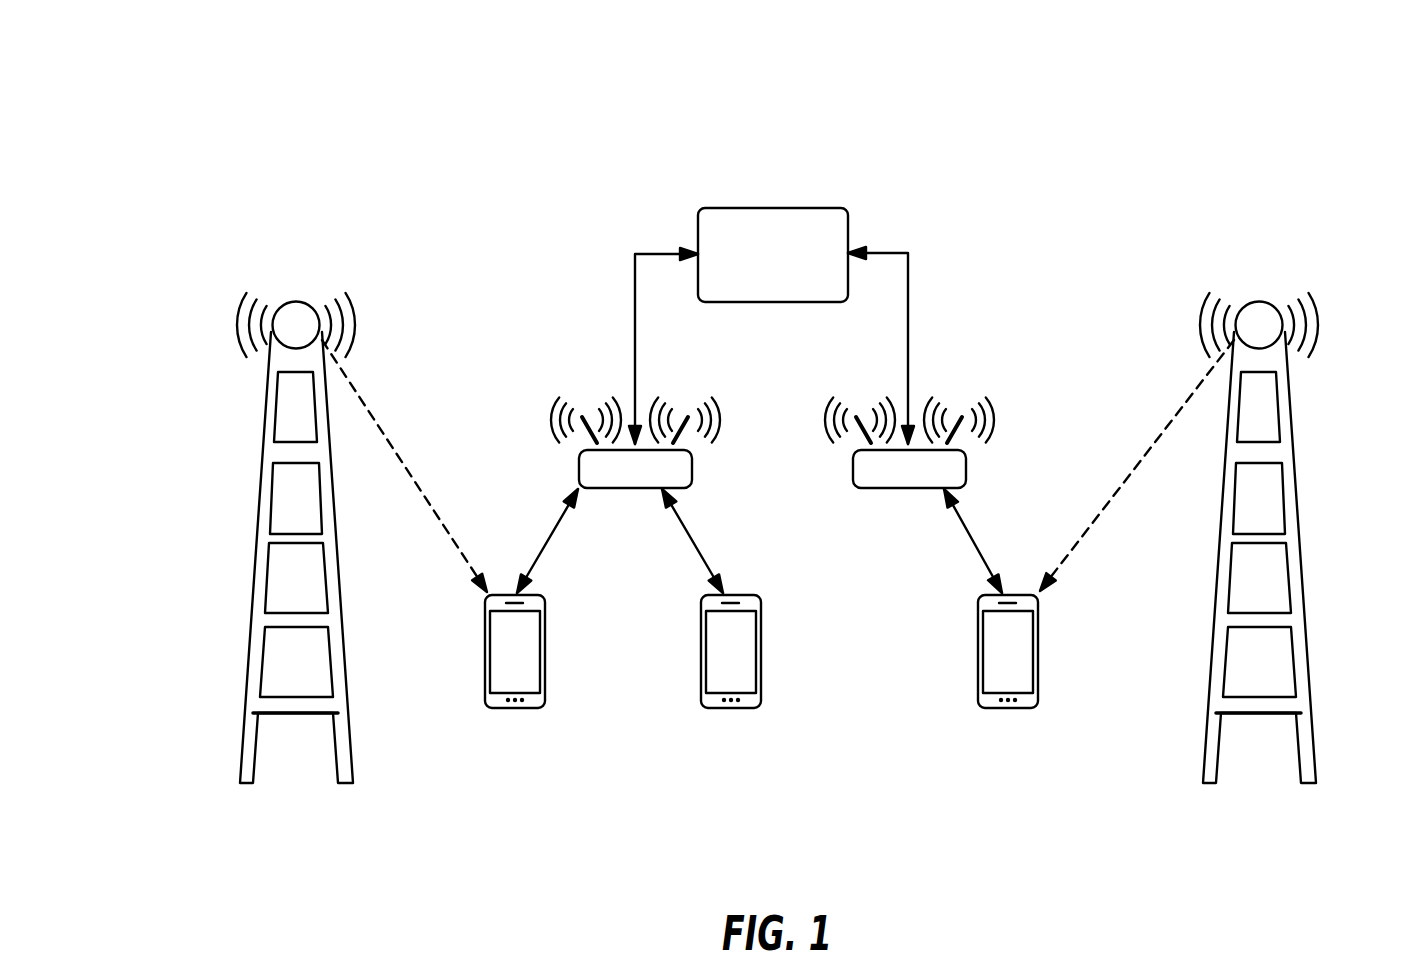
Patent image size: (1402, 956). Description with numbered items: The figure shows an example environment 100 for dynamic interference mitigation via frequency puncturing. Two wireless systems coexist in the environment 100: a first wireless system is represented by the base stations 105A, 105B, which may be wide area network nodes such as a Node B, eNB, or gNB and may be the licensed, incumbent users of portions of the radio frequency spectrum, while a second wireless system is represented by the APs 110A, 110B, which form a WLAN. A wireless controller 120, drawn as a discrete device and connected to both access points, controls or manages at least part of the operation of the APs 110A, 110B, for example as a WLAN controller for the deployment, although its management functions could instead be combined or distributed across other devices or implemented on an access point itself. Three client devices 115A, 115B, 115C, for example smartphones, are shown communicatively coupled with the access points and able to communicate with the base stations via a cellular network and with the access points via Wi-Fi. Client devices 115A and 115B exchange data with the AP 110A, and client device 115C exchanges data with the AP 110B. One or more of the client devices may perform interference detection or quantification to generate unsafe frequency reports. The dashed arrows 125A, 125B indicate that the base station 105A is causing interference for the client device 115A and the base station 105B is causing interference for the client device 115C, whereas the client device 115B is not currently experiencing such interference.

The environment 100 is at (197, 97).
The base station 105A is at (270, 372).
The base station 105B is at (1291, 414).
The AP 110A is at (692, 478).
The AP 110B is at (966, 478).
The client device 115A is at (546, 630).
The client device 115B is at (763, 630).
The client device 115C is at (1040, 630).
The wireless controller 120 is at (848, 247).
The arrow 125A is at (428, 497).
The arrow 125B is at (1142, 456).